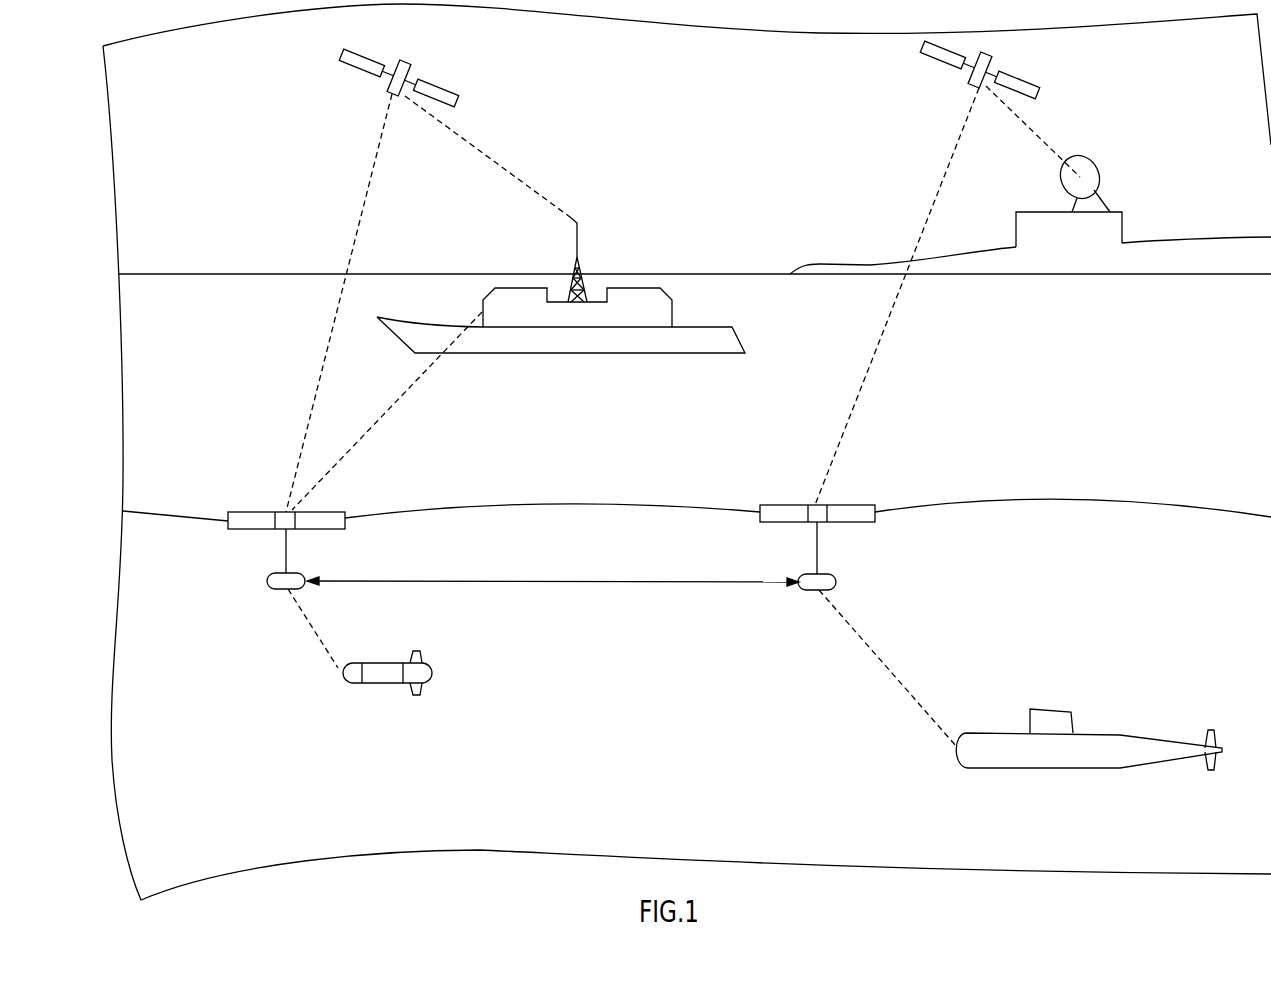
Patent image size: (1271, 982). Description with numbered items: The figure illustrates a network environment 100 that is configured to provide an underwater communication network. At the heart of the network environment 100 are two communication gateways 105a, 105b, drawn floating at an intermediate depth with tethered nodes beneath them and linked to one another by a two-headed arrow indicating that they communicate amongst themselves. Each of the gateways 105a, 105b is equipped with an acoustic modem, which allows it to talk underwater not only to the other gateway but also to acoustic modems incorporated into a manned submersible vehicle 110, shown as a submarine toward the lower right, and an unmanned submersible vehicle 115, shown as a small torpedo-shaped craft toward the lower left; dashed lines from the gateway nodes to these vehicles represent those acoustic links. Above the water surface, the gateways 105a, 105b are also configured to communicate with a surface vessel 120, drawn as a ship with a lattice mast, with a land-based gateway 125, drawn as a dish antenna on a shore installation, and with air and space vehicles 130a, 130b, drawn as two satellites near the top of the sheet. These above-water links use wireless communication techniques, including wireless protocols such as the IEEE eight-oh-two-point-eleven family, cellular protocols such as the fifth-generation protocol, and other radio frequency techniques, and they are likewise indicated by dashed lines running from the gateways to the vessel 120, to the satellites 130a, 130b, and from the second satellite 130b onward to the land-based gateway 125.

The network environment 100 is at (36, 47).
The communication gateway 105a is at (270, 574).
The communication gateway 105b is at (833, 575).
The manned submersible vehicle 110 is at (1110, 733).
The unmanned submersible vehicle 115 is at (392, 663).
The surface vessel 120 is at (745, 340).
The land-based gateway 125 is at (1038, 212).
The air and space vehicle 130a is at (444, 92).
The air and space vehicle 130b is at (938, 64).